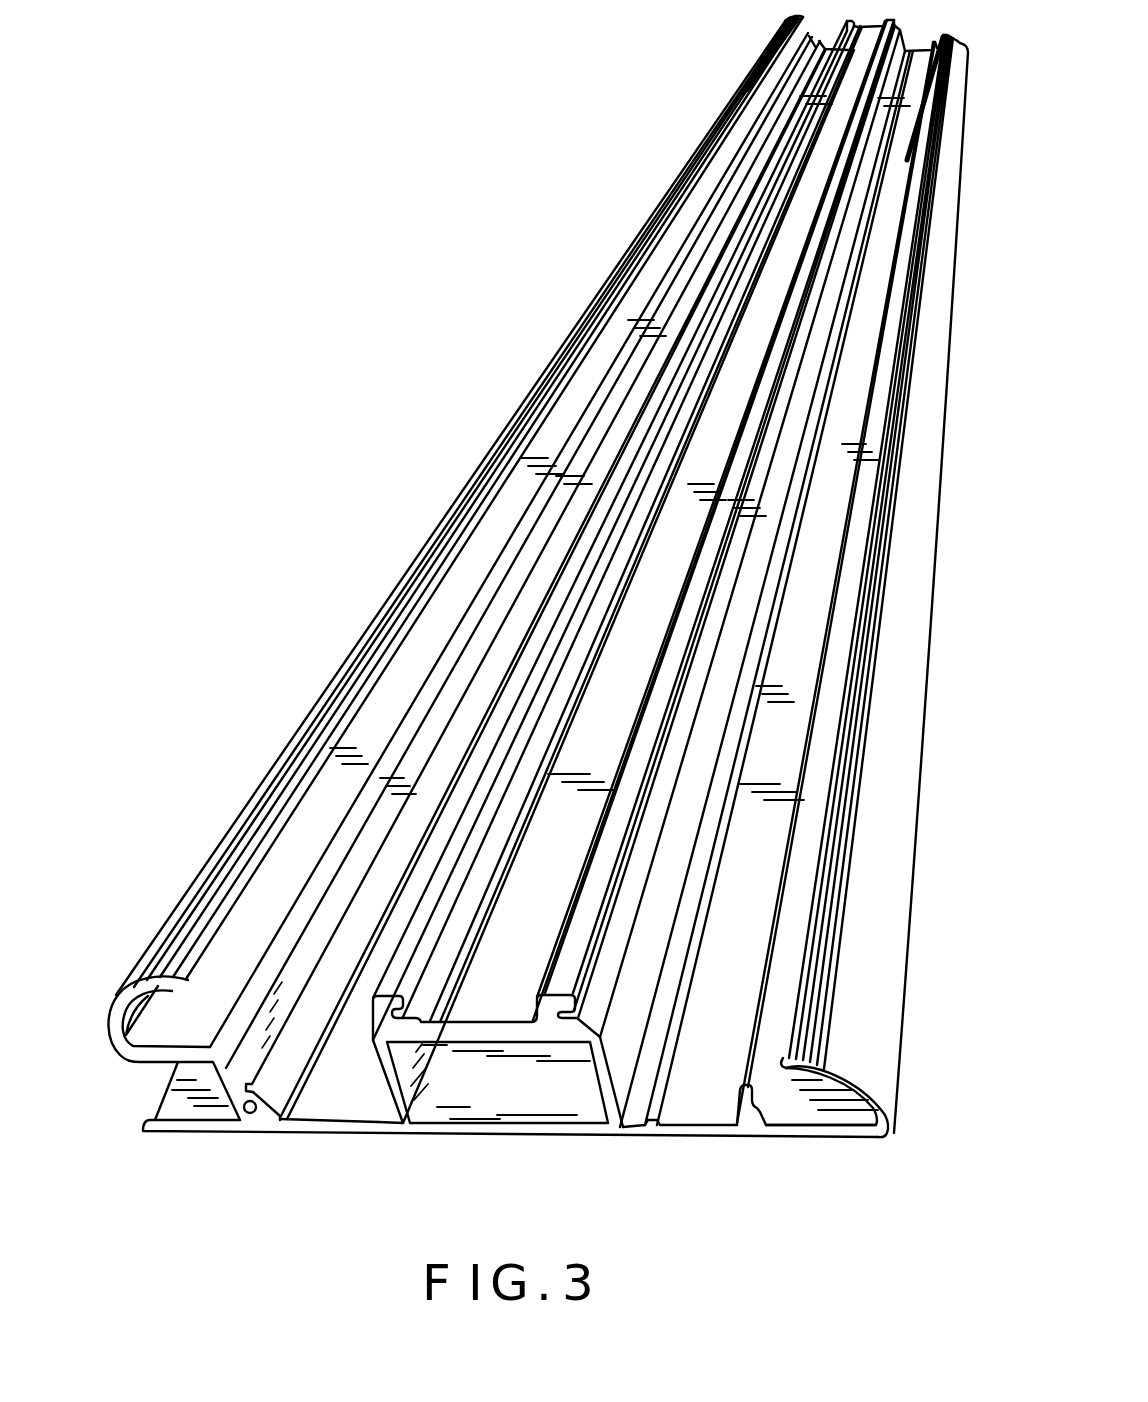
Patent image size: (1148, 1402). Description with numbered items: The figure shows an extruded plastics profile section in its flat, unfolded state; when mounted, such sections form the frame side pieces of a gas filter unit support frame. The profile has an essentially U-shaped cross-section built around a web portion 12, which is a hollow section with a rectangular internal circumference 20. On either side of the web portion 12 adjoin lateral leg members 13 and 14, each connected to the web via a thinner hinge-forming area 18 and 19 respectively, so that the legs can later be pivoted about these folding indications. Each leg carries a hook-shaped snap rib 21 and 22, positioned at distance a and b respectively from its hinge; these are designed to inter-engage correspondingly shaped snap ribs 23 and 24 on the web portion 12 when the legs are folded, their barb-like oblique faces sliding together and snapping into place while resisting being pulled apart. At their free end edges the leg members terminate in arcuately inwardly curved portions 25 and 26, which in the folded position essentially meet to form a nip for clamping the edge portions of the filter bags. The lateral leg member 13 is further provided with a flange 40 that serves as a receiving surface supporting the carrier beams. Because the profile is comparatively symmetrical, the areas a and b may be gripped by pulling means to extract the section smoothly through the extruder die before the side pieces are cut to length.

The web portion 12 is at (487, 1129).
The lateral leg member 13 is at (284, 1135).
The lateral leg member 14 is at (835, 1140).
The hinge-forming area 18 is at (386, 1136).
The hinge-forming area 19 is at (640, 1135).
The rectangular internal circumference 20 is at (520, 1035).
The snap rib 21 is at (247, 1113).
The snap rib 22 is at (775, 1120).
The snap rib 23 is at (416, 928).
The snap rib 24 is at (596, 918).
The arcuately inwardly curved portion 25 is at (122, 992).
The arcuately inwardly curved portion 26 is at (854, 1072).
The flange 40 is at (151, 1126).
The distance a is at (376, 1138).
The distance b is at (736, 1138).